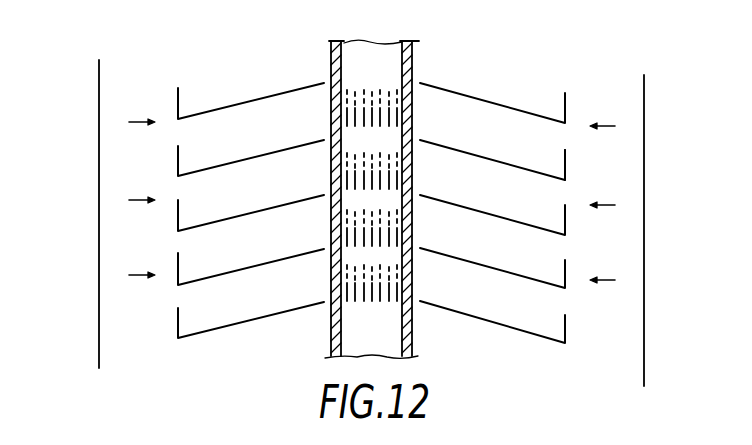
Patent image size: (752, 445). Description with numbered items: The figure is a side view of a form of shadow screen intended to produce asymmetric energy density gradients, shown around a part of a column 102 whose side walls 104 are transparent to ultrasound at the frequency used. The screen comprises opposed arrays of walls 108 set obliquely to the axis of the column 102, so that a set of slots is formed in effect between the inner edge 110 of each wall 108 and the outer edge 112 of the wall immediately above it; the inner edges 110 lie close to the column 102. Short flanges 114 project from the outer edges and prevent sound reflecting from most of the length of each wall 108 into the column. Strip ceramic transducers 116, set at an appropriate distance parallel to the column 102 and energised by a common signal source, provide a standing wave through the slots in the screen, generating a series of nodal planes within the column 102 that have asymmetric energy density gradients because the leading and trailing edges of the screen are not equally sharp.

The column 102 is at (408, 184).
The side walls 104 is at (386, 35).
The walls 108 is at (404, 203).
The inner edge 110 is at (416, 180).
The outer edge 112 is at (561, 172).
The short flanges 114 is at (557, 318).
The strip ceramic transducers 116 is at (90, 303).